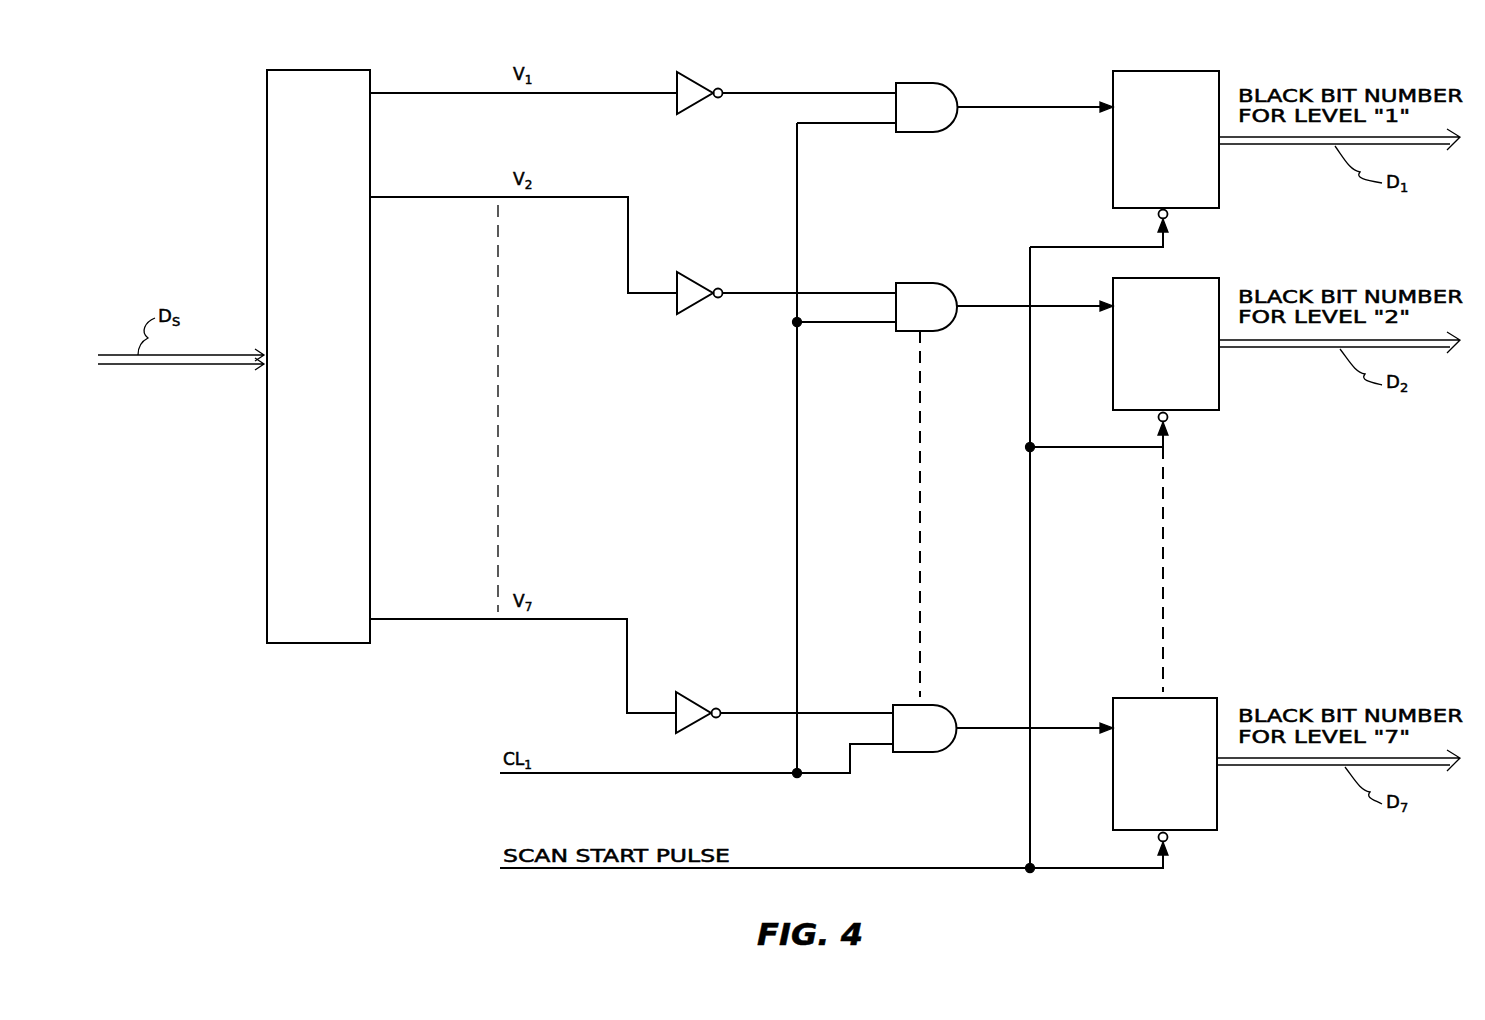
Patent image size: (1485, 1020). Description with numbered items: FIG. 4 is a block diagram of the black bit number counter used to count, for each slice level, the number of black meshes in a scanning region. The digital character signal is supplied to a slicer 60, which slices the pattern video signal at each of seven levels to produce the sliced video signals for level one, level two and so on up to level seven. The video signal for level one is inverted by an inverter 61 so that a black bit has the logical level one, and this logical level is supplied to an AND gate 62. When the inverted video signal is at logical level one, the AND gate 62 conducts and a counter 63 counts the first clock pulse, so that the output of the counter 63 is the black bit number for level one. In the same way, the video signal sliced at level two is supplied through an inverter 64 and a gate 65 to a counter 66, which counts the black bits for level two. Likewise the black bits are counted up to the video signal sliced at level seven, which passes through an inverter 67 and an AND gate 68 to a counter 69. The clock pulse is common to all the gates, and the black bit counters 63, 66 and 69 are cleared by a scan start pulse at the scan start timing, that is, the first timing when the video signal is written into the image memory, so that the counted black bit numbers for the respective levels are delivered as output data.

The slicer 60 is at (360, 69).
The inverter 61 is at (694, 75).
The AND gate 62 is at (940, 84).
The counter 63 is at (1152, 70).
The inverter 64 is at (694, 285).
The gate 65 is at (936, 285).
The counter 66 is at (1180, 278).
The inverter 67 is at (692, 695).
The AND gate 68 is at (940, 700).
The counter 69 is at (1193, 698).